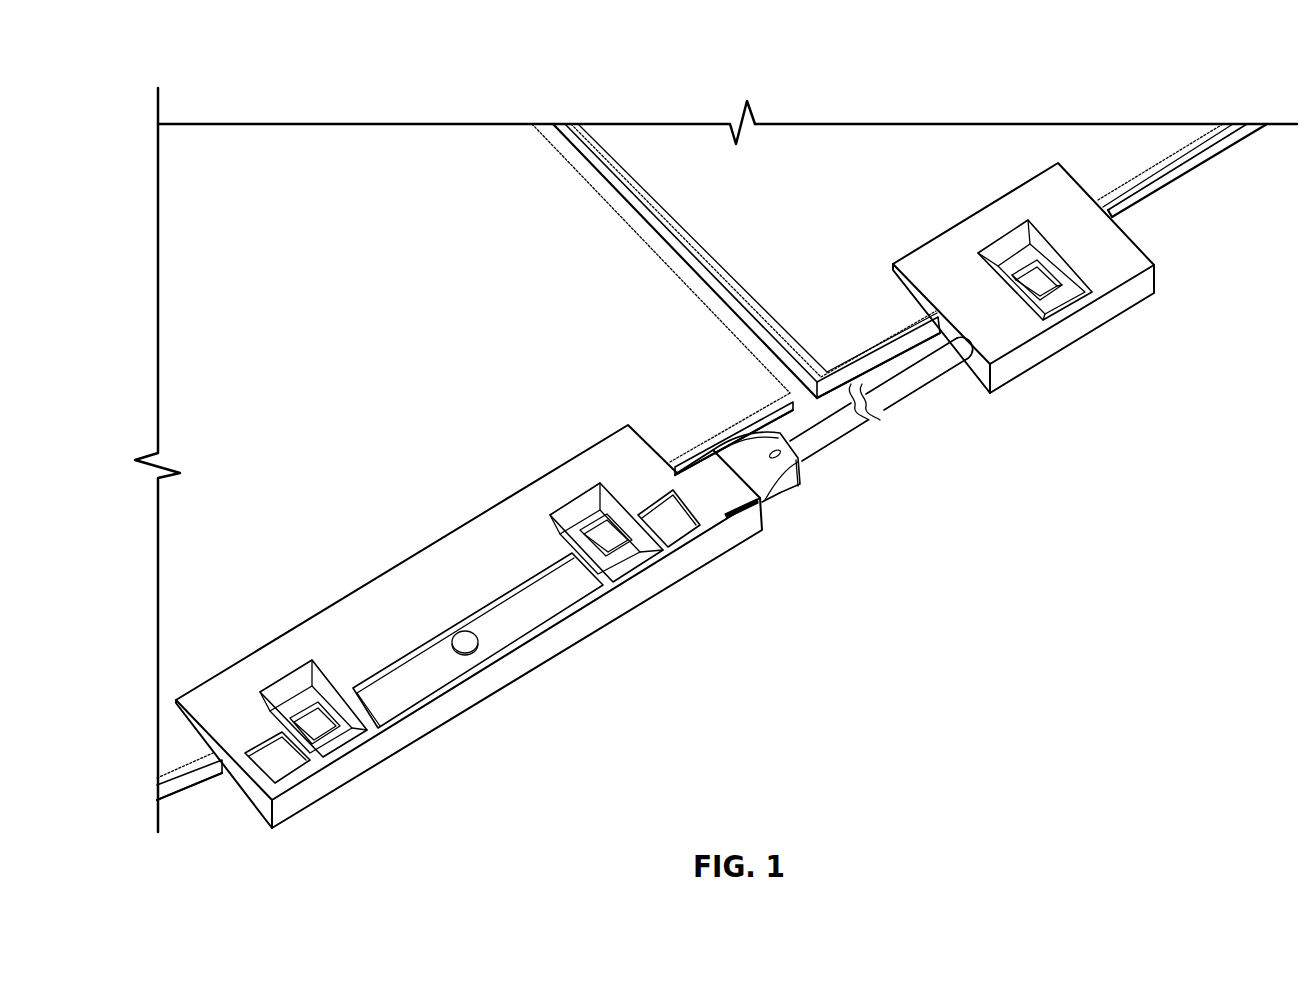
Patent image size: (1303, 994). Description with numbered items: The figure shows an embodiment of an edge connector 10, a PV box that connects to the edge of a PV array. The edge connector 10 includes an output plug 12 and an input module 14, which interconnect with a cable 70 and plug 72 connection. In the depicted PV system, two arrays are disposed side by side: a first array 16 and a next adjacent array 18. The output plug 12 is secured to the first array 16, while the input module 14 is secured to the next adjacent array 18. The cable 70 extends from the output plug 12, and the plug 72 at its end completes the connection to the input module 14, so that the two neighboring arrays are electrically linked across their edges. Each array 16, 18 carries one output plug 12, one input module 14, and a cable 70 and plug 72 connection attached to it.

The edge connector 10 is at (241, 38).
The output plug 12 is at (355, 612).
The input module 14 is at (934, 260).
The first array 16 is at (277, 138).
The next adjacent array 18 is at (830, 138).
The cable 70 is at (910, 377).
The plug 72 is at (772, 468).